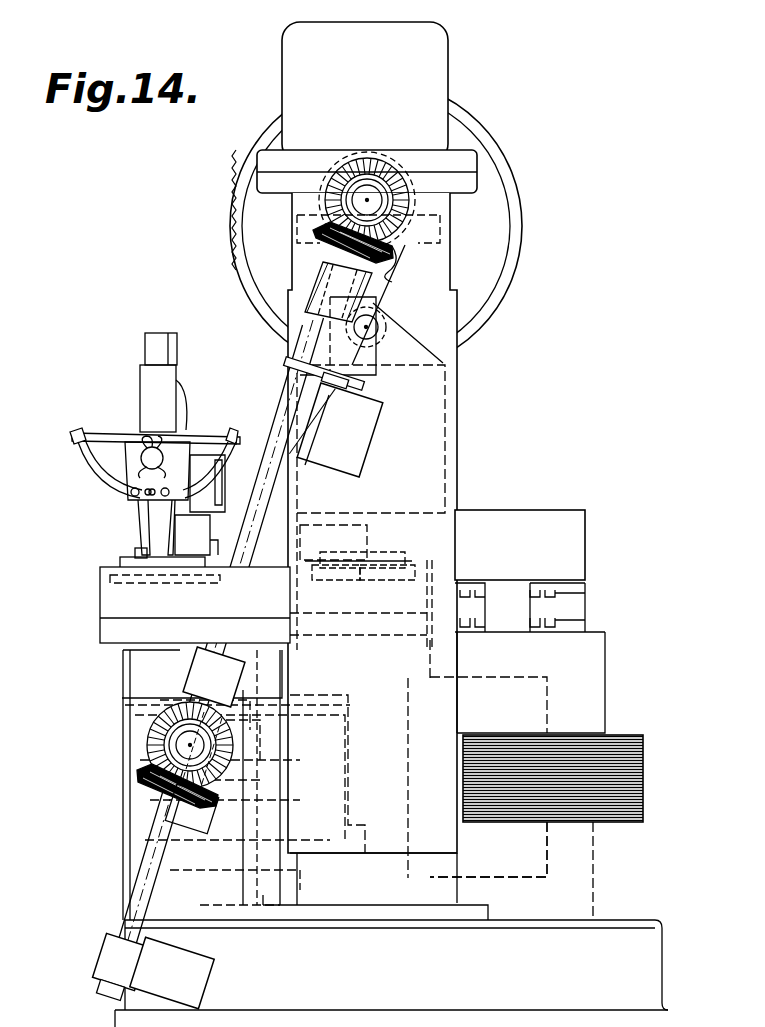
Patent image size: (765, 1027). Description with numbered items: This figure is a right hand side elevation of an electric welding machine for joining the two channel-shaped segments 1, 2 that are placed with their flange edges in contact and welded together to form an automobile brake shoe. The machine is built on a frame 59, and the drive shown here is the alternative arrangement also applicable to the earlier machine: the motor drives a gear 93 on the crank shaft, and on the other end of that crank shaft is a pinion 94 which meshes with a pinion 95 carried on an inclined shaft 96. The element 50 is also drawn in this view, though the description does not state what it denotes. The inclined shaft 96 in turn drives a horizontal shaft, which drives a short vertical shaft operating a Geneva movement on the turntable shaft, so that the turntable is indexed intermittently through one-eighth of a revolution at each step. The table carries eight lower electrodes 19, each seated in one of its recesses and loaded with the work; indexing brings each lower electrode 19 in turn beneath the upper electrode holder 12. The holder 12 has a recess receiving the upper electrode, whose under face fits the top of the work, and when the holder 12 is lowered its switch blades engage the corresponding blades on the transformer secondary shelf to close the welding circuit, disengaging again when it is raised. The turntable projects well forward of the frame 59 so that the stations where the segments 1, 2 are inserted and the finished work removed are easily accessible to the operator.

The segment 1 is at (386, 555).
The segment 2 is at (390, 570).
The upper electrode holder 12 is at (473, 521).
The electrode 19 is at (345, 578).
The shaft 50 is at (368, 198).
The frame 59 is at (455, 441).
The gear 93 is at (233, 206).
The pinion 94 is at (352, 170).
The pinion 95 is at (360, 255).
The inclined shaft 96 is at (320, 335).